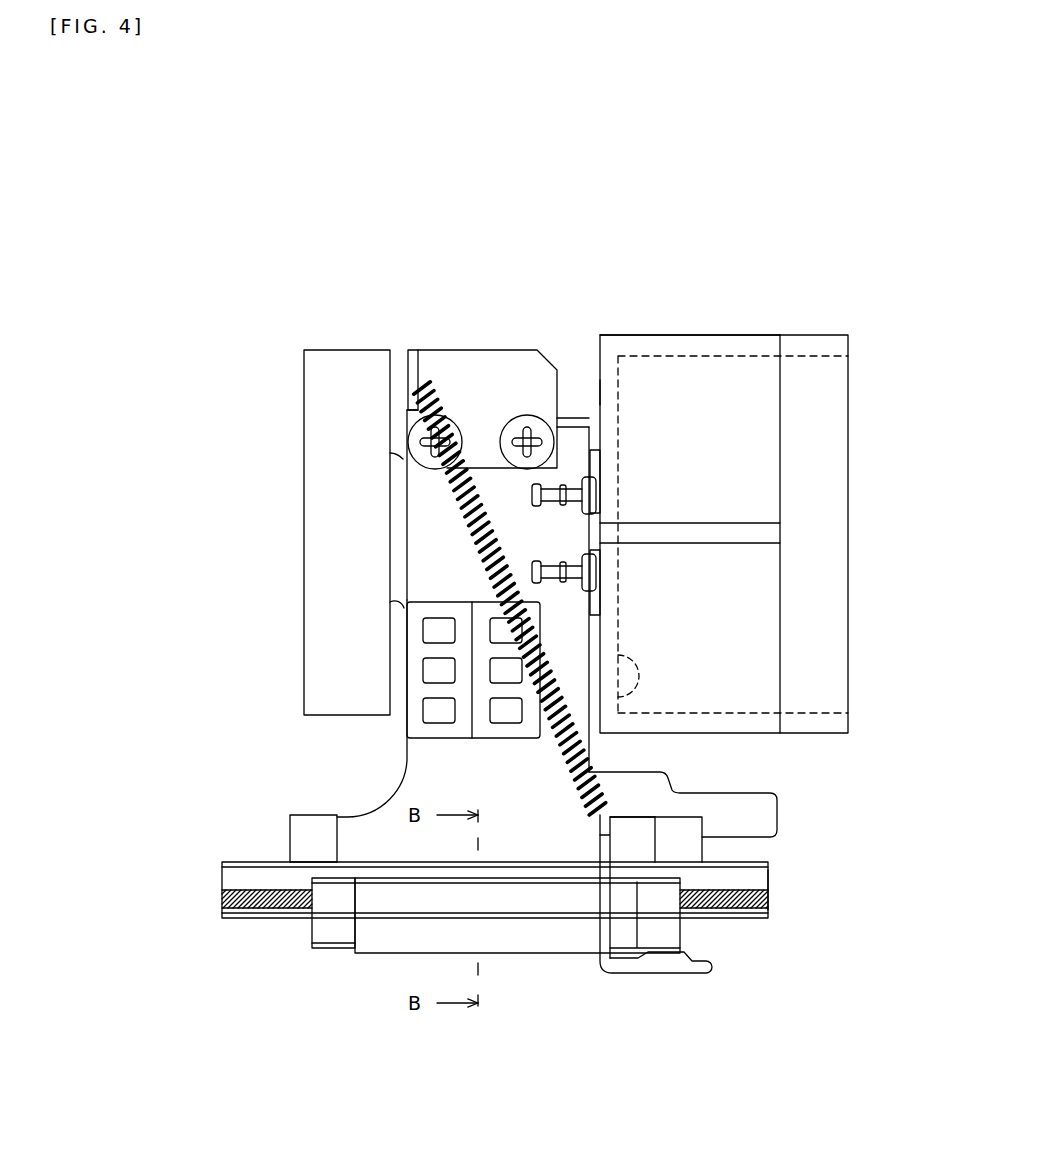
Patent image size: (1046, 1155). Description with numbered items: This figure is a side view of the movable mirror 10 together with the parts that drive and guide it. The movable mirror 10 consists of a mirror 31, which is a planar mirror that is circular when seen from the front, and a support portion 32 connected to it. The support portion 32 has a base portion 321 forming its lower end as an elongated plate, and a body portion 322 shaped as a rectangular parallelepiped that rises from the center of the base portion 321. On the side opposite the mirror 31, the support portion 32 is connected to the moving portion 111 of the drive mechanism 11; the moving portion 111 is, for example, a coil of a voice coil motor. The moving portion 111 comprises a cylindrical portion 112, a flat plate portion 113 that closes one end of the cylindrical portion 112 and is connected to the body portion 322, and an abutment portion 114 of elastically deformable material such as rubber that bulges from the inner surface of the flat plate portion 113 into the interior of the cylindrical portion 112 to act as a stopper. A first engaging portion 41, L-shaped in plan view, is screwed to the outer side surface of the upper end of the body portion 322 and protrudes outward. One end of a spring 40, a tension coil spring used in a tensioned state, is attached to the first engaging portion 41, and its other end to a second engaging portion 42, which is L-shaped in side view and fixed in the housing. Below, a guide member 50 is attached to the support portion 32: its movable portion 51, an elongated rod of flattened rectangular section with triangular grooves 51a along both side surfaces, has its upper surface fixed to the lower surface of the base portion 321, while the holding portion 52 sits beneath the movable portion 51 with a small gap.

The movable mirror 10 is at (418, 307).
The drive mechanism 11 is at (727, 333).
The moving portion 111 is at (643, 335).
The cylindrical portion 112 is at (752, 347).
The flat plate portion 113 is at (612, 393).
The abutment portion 114 is at (622, 657).
The mirror 31 is at (327, 350).
The support portion 32 is at (262, 731).
The base portion 321 is at (290, 838).
The body portion 322 is at (407, 755).
The spring 40 is at (578, 733).
The first engaging portion 41 is at (460, 350).
The second engaging portion 42 is at (663, 975).
The guide member 50 is at (517, 956).
The movable portion 51 is at (517, 936).
The groove 51a is at (768, 885).
The holding portion 52 is at (385, 955).